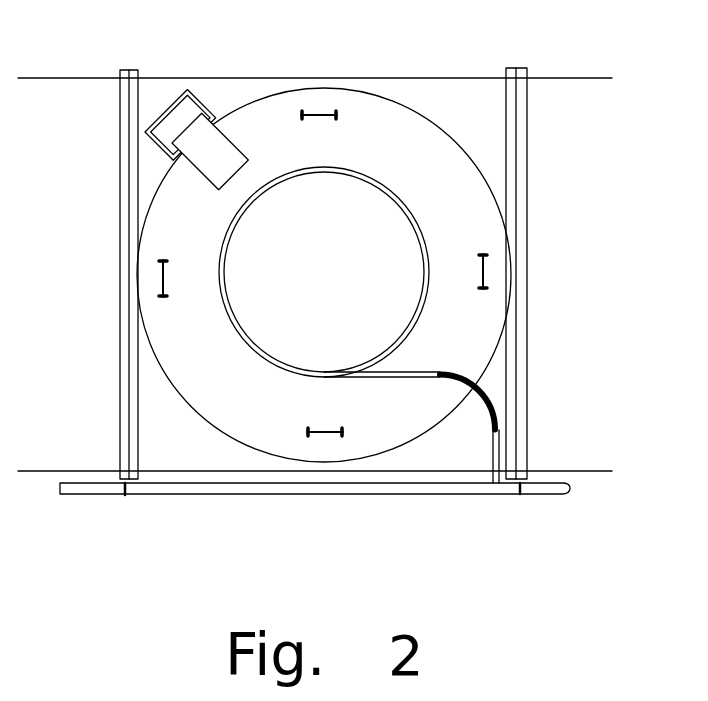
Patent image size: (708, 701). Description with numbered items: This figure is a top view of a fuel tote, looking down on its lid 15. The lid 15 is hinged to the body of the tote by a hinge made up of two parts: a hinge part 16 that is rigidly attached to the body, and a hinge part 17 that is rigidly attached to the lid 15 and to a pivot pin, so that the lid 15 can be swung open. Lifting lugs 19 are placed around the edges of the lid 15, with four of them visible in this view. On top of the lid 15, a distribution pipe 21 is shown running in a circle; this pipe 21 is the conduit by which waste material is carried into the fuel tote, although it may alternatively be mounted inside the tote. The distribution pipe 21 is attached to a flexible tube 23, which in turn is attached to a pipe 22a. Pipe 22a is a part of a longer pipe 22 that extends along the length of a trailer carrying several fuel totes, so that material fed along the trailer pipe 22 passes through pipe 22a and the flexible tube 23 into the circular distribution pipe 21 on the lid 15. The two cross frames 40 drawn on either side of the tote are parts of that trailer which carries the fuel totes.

The lid 15 is at (427, 158).
The hinge part 16 is at (172, 105).
The hinge part 17 is at (212, 147).
The lifting lugs 19 is at (327, 113).
The distribution pipe 21 is at (425, 287).
The pipe 22 is at (468, 488).
The pipe 22a is at (497, 452).
The flexible tube 23 is at (500, 399).
The cross frames 40 is at (119, 222).